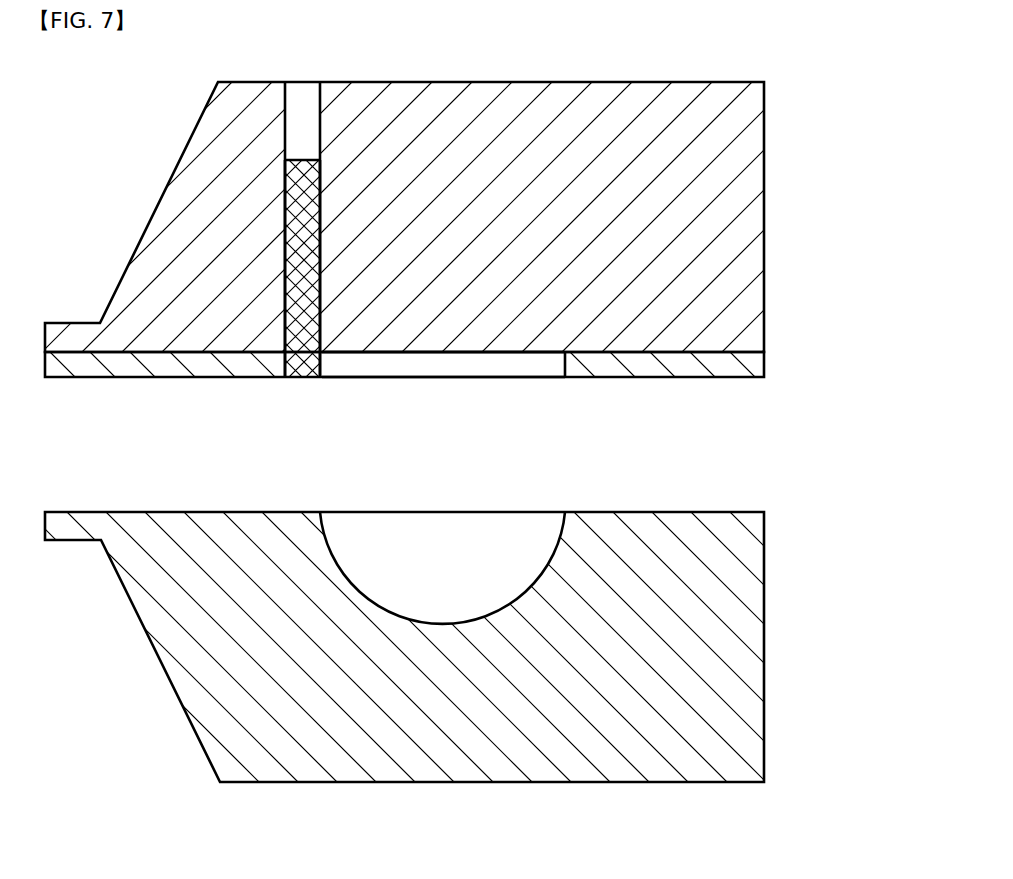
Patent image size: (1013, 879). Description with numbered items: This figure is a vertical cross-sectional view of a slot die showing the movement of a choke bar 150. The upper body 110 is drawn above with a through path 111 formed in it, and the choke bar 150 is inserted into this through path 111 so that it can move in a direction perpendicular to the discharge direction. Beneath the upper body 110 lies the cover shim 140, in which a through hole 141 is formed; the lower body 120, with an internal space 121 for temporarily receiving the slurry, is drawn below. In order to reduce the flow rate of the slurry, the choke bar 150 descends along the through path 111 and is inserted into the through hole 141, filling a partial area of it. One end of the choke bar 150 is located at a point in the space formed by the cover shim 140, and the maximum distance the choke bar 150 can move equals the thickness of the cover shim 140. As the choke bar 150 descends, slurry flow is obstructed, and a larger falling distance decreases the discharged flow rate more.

The upper body 110 is at (764, 216).
The through path 111 is at (300, 115).
The choke bar 150 is at (300, 215).
The cover shim 140 is at (764, 362).
The through hole 141 is at (452, 364).
The lower body 120 is at (764, 645).
The internal space 121 is at (440, 600).